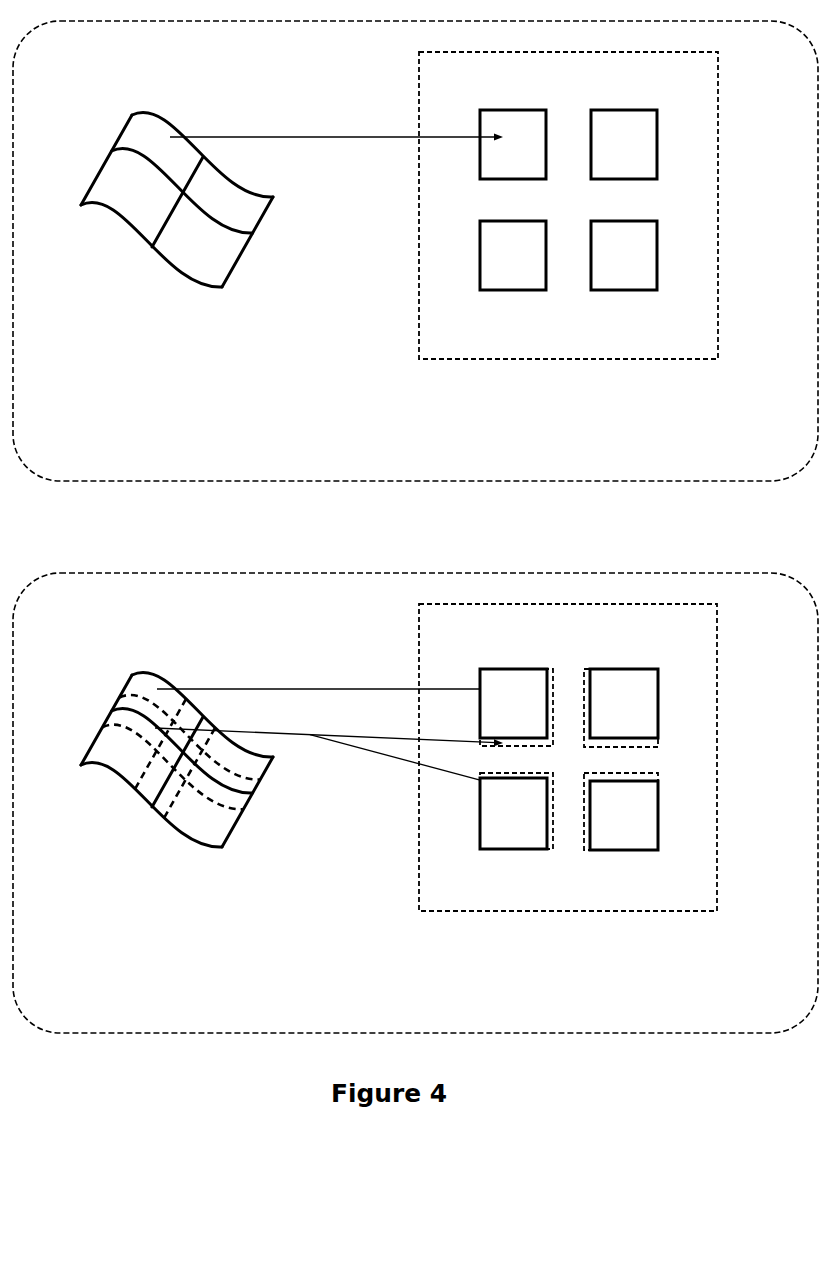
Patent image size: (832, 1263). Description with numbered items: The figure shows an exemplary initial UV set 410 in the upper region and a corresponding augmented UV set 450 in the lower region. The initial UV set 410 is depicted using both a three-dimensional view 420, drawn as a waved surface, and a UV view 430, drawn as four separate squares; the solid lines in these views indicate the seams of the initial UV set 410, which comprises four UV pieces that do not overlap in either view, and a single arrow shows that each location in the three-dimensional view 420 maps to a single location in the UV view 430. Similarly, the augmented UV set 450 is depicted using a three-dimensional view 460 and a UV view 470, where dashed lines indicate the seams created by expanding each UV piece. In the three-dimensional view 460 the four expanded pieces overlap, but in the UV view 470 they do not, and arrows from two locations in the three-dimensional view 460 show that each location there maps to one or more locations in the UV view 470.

The initial UV set 410 is at (432, 472).
The 3D view 420 is at (178, 287).
The UV view 430 is at (482, 359).
The augmented UV set 450 is at (432, 1024).
The 3D view 460 is at (178, 845).
The UV view 470 is at (482, 911).